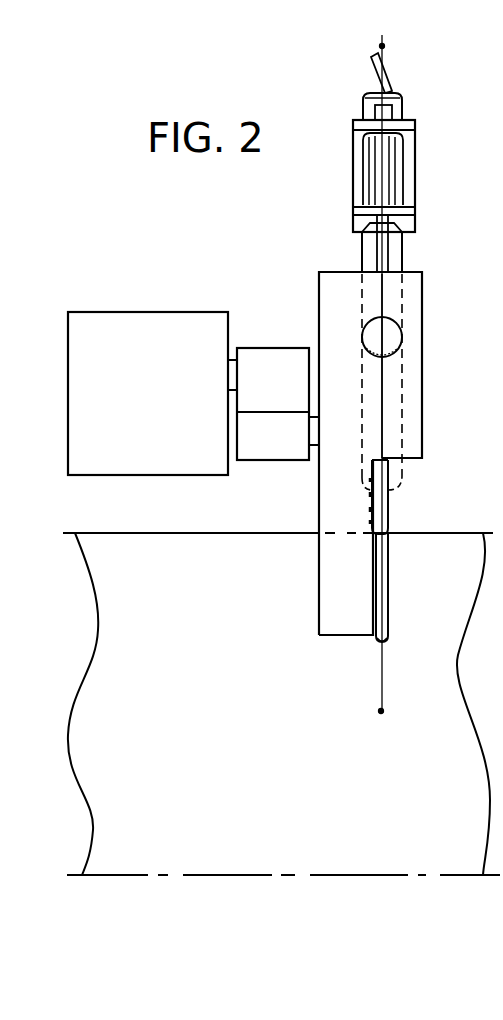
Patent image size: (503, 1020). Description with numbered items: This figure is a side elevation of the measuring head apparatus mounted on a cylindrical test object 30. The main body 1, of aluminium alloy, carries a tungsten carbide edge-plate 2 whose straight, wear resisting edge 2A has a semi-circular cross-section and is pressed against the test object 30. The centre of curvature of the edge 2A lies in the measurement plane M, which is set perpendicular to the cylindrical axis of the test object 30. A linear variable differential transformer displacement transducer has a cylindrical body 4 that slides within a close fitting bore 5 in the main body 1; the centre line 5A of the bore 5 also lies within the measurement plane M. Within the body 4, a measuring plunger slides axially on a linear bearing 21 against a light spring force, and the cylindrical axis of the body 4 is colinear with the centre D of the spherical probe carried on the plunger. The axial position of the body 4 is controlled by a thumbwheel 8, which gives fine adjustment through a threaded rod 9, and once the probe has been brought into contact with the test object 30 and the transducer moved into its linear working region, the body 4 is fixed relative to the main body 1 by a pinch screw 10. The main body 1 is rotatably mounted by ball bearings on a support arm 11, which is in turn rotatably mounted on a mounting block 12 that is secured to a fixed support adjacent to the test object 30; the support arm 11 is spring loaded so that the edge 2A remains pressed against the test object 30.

The main body 1 is at (330, 290).
The edge-plate 2 is at (385, 580).
The wear resisting edge 2A is at (375, 640).
The body 4 is at (370, 262).
The bore 5 is at (405, 378).
The centre line 5A is at (382, 425).
The thumbwheel 8 is at (395, 175).
The threaded rod 9 is at (393, 247).
The pinch screw 10 is at (390, 332).
The support arm 11 is at (273, 358).
The mounting block 12 is at (120, 328).
The linear bearing 21 is at (398, 476).
The test object 30 is at (287, 533).
The centre of the spherical probe D is at (390, 517).
The measurement plane M is at (385, 48).